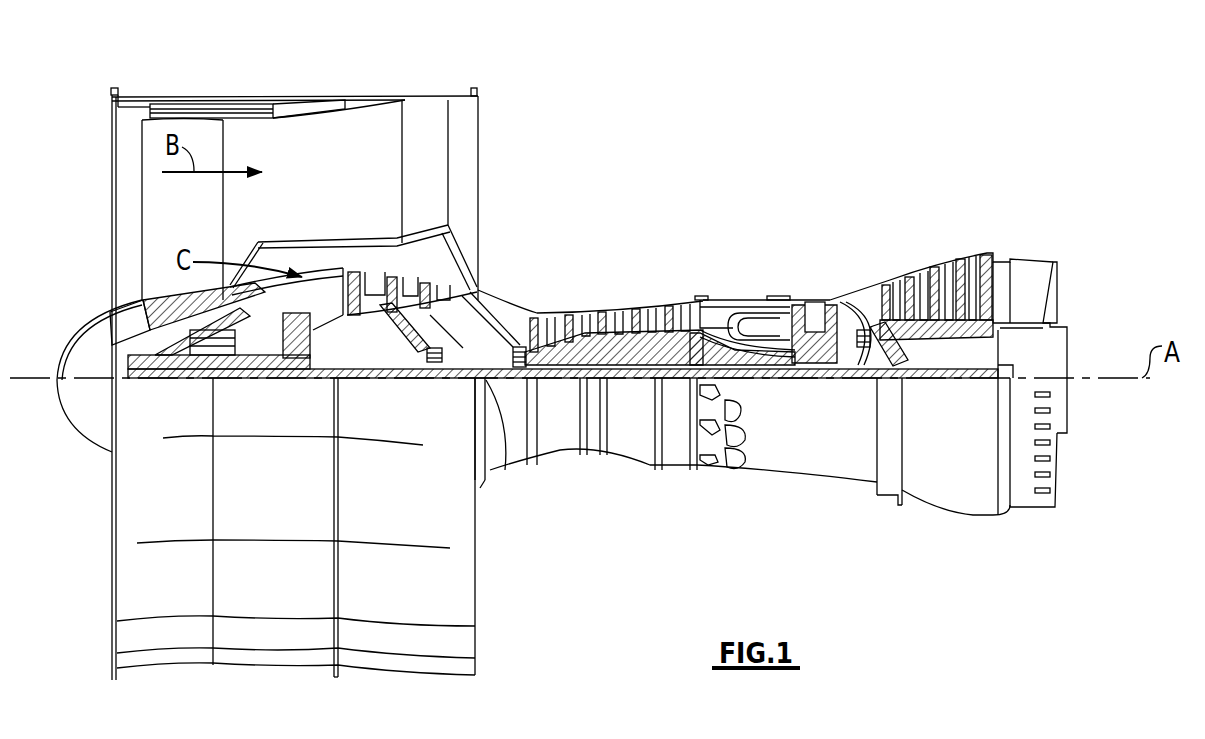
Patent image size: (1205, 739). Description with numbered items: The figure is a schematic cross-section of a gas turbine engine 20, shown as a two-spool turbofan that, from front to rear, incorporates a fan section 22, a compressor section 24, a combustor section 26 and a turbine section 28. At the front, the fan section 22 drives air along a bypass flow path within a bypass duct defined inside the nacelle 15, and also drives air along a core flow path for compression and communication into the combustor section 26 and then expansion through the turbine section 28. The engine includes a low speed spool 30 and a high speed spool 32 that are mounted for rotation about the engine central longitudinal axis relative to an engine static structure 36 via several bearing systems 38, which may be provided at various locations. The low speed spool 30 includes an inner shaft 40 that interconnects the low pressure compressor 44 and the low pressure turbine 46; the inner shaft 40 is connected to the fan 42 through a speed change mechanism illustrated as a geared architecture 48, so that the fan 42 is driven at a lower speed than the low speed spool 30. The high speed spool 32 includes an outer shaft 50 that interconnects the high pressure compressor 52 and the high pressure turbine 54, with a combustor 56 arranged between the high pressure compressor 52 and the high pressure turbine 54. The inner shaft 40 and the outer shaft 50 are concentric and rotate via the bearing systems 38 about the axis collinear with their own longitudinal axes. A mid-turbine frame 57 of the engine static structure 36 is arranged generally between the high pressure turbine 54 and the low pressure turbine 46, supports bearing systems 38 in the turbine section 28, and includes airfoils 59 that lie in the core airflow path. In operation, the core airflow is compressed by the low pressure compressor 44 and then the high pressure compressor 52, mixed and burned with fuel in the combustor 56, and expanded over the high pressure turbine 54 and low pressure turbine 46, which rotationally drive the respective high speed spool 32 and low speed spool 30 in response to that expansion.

The nacelle 15 is at (293, 100).
The gas turbine engine 20 is at (752, 148).
The fan section 22 is at (222, 88).
The compressor section 24 is at (526, 292).
The combustor section 26 is at (750, 276).
The turbine section 28 is at (895, 242).
The low speed spool 30 is at (636, 383).
The high speed spool 32 is at (674, 350).
The engine static structure 36 is at (676, 430).
The bearing systems 38 is at (423, 376).
The inner shaft 40 is at (505, 383).
The fan 42 is at (198, 224).
The low pressure compressor 44 is at (392, 290).
The low pressure turbine 46 is at (940, 266).
The geared architecture 48 is at (295, 378).
The outer shaft 50 is at (762, 365).
The high pressure compressor 52 is at (592, 335).
The high pressure turbine 54 is at (815, 330).
The combustor 56 is at (760, 320).
The mid-turbine frame 57 is at (856, 284).
The airfoils 59 is at (890, 338).